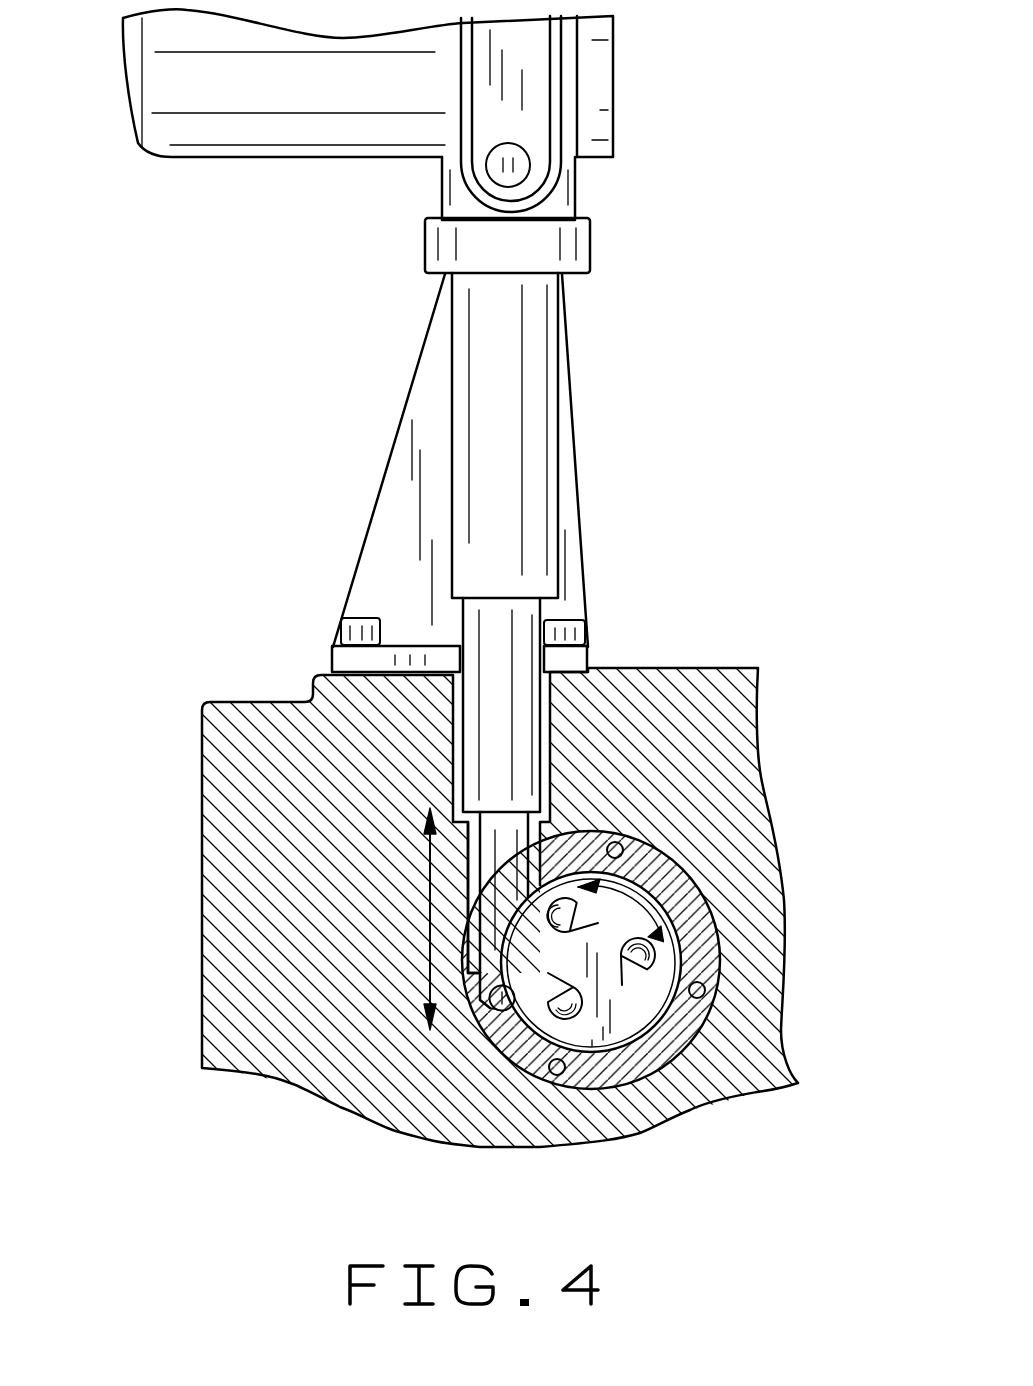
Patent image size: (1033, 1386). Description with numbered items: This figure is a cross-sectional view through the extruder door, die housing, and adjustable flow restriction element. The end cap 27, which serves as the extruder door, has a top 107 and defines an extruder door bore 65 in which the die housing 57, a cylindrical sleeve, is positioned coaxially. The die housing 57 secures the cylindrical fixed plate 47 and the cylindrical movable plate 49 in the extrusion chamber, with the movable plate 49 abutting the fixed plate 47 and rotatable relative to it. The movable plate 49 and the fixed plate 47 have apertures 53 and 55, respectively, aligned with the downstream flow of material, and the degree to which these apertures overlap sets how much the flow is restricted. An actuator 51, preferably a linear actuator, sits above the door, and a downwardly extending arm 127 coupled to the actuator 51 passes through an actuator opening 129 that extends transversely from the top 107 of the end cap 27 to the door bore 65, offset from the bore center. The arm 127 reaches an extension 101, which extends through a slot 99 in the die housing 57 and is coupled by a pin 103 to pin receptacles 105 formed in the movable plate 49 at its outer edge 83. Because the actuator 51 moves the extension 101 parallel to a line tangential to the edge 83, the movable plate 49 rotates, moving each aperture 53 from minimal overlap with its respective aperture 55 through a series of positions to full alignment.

The end cap 27 is at (717, 743).
The fixed plate component 47 is at (640, 980).
The movable plate component 49 is at (602, 1025).
The actuator 51 is at (283, 138).
The apertures 53 is at (630, 977).
The apertures 55 is at (640, 957).
The die housing 57 is at (700, 942).
The bore 65 is at (697, 897).
The outer edge 83 is at (700, 860).
The slot 99 is at (467, 943).
The extension 101 is at (500, 887).
The pin 103 is at (503, 1003).
The pin receptacles 105 is at (480, 992).
The top 107 is at (703, 668).
The arm 127 is at (515, 628).
The actuator opening 129 is at (458, 782).